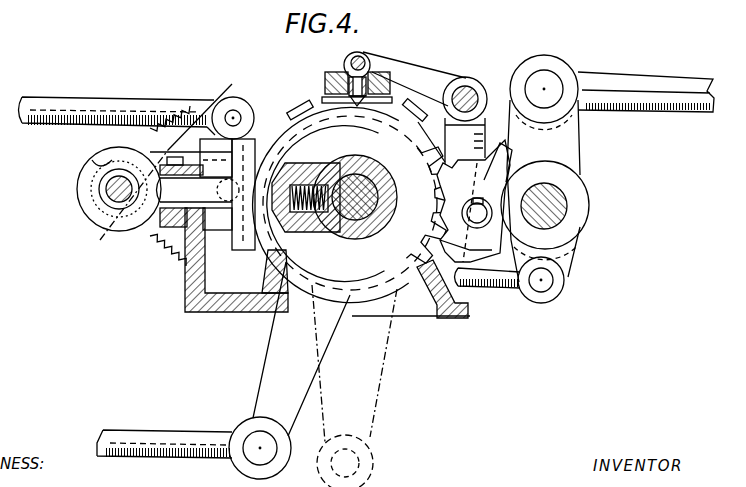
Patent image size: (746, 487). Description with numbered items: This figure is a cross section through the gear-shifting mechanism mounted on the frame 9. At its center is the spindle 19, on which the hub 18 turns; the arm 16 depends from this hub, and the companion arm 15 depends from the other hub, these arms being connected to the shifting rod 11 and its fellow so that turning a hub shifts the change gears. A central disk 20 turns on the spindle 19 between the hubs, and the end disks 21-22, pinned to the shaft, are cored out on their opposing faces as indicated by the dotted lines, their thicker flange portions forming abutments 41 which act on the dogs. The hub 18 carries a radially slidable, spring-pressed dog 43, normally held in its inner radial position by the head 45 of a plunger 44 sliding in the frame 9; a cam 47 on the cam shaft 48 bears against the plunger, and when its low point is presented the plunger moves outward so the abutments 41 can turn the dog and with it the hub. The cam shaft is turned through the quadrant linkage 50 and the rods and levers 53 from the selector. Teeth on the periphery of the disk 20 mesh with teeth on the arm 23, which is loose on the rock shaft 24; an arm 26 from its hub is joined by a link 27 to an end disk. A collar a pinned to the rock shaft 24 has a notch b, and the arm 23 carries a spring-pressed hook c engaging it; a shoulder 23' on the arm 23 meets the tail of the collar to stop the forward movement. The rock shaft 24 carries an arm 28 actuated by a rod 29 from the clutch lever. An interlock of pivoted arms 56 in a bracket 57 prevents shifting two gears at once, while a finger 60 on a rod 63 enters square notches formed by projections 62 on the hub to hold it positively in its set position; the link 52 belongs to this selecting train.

The frame 9 is at (205, 293).
The rod 11 is at (163, 434).
The arm 15 is at (264, 370).
The arm 16 is at (377, 378).
The hub 18 is at (378, 181).
The spindle 19 is at (350, 185).
The central disk 20 is at (397, 288).
The end disks 21-22 is at (298, 128).
The arm 23 is at (458, 192).
The shoulder 23' is at (466, 277).
The rock shaft 24 is at (552, 219).
The arm 26 is at (566, 258).
The link 27 is at (503, 282).
The arm 28 is at (578, 140).
The rod 29 is at (607, 78).
The abutments 41 is at (298, 169).
The dog 43 is at (248, 243).
The plunger 44 is at (160, 232).
The head 45 is at (233, 228).
The cam 47 is at (78, 190).
The cam shaft 48 is at (108, 200).
The axis line 50 is at (129, 207).
The link 52 is at (211, 110).
The rods and levers 53 is at (81, 104).
The pivoted arms 56 is at (367, 53).
The bracket 57 is at (345, 64).
The finger 60 is at (431, 68).
The projections 62 is at (324, 92).
The rod 63 is at (470, 94).
The collar a is at (589, 190).
The notch b is at (520, 168).
The spring-pressed hook c is at (499, 147).